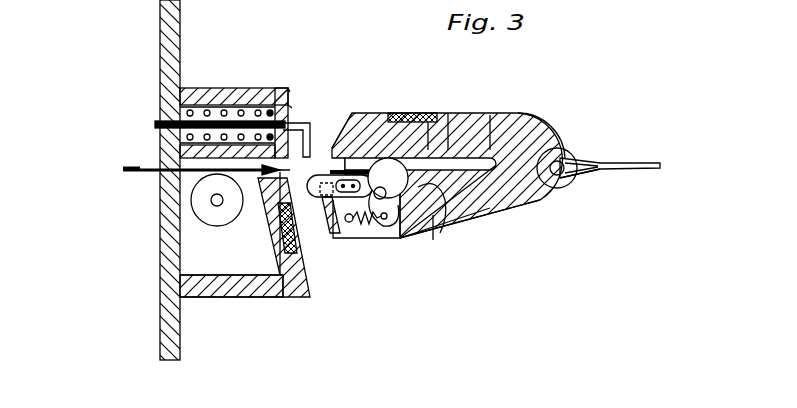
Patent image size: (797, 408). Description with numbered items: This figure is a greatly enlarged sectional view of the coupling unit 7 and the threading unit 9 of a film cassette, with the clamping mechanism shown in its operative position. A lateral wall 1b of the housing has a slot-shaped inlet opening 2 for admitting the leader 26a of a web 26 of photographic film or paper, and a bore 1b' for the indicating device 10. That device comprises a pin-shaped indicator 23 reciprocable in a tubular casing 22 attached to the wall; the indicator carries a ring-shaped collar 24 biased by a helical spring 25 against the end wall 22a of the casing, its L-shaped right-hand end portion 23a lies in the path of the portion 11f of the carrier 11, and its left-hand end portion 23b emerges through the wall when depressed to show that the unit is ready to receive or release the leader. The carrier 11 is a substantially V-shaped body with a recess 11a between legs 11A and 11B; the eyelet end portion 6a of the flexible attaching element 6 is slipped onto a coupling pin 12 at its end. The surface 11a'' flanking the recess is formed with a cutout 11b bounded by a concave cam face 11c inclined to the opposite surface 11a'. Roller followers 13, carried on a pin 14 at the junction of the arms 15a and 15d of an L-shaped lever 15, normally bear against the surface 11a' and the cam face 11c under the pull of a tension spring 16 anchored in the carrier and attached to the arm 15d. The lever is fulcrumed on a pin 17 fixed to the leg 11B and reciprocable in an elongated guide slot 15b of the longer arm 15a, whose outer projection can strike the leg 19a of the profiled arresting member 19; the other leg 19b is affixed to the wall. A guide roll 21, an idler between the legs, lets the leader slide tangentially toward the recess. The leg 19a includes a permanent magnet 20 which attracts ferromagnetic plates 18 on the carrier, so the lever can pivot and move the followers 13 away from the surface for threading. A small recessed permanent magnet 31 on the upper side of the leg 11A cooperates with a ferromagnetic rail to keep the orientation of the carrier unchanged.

The lateral wall 1b is at (145, 180).
The bore 1b' is at (130, 91).
The inlet opening 2 is at (166, 166).
The attaching element 6 is at (636, 163).
The end portion of attaching element 6a is at (585, 172).
The coupling unit 7 is at (538, 66).
The threading unit 9 is at (276, 302).
The indicating device 10 is at (268, 56).
The carrier 11 is at (563, 120).
The recess 11a is at (421, 113).
The surface 11a' is at (459, 243).
The surface 11a'' is at (500, 117).
The leg 11A is at (522, 142).
The leg 11B is at (514, 210).
The cutout 11b is at (448, 205).
The cam face 11c is at (433, 212).
The portion of carrier 11f is at (354, 112).
The coupling pin 12 is at (568, 151).
The roller followers 13 is at (428, 150).
The pin 14 is at (448, 150).
The lever 15 is at (318, 175).
The lever arm 15a is at (318, 200).
The guide slot 15b is at (346, 178).
The lever arm 15d is at (433, 240).
The tension spring 16 is at (388, 227).
The pin 17 is at (386, 165).
The ferromagnetic plates 18 is at (350, 223).
The arresting member 19 is at (298, 296).
The leg of arresting member 19a is at (248, 205).
The leg of arresting member 19b is at (203, 290).
The permanent magnet 20 is at (276, 228).
The guide roll 21 is at (206, 218).
The tubular casing 22 is at (213, 90).
The end wall of casing 22a is at (290, 88).
The pin-shaped indicator 23 is at (252, 118).
The end portion of indicator 23a is at (294, 108).
The end portion of indicator 23b is at (155, 125).
The collar 24 is at (282, 112).
The helical spring 25 is at (186, 100).
The web 26 is at (136, 175).
The leader 26a is at (289, 168).
The permanent magnet 31 is at (408, 113).